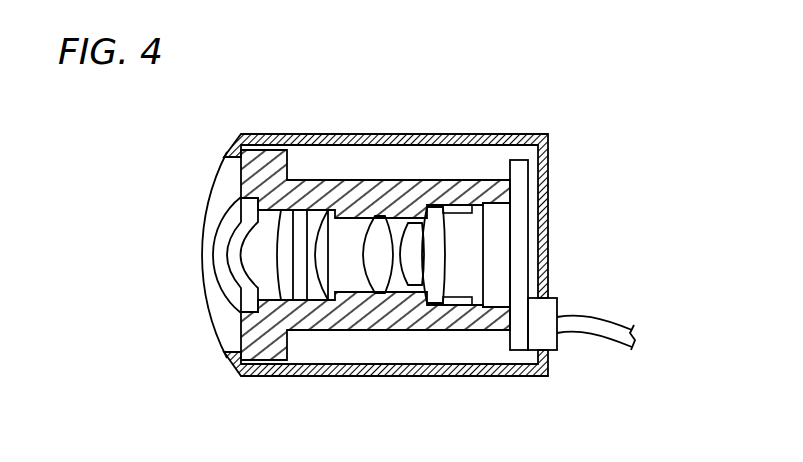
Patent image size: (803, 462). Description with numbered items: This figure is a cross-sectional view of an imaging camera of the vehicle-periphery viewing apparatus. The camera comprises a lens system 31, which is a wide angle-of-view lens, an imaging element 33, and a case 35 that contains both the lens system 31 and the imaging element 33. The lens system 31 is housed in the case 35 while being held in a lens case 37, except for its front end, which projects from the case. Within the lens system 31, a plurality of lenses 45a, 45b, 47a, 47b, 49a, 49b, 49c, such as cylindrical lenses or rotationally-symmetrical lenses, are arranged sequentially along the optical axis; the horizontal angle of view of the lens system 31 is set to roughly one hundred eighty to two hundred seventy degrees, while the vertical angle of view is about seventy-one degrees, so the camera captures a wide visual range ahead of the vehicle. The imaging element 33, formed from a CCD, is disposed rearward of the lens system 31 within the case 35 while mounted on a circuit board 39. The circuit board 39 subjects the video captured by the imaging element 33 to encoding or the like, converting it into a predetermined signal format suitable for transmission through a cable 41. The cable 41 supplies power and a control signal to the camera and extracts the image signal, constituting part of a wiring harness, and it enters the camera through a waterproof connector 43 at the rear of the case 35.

The lens system 31 is at (197, 188).
The imaging element 33 is at (495, 203).
The case 35 is at (309, 134).
The lens case 37 is at (356, 180).
The circuit board 39 is at (520, 160).
The cable 41 is at (610, 340).
The waterproof connector 43 is at (553, 343).
The lens 45a is at (218, 331).
The lens 45b is at (238, 287).
The lens 47a is at (288, 283).
The lens 47b is at (315, 290).
The lens 49a is at (374, 283).
The lens 49b is at (408, 290).
The lens 49c is at (433, 293).